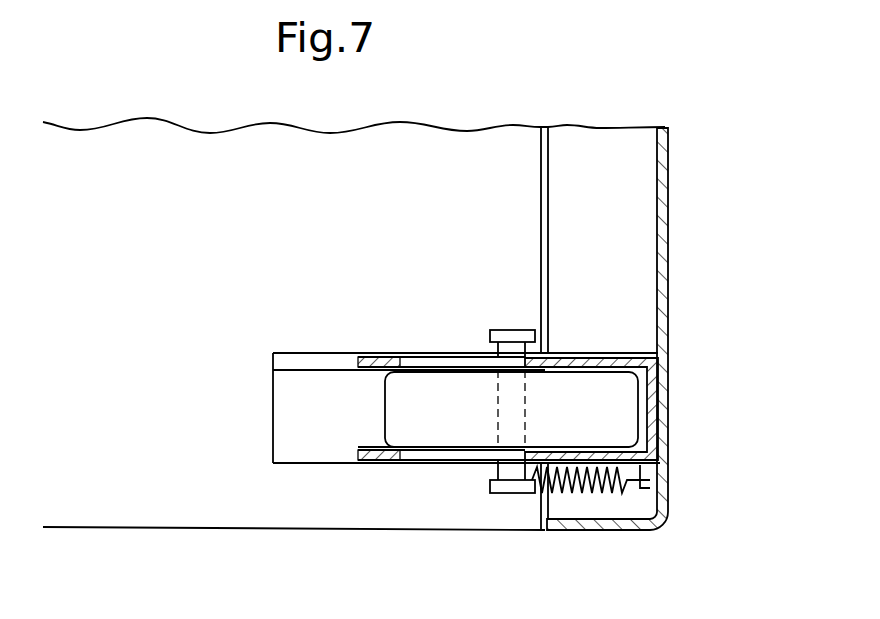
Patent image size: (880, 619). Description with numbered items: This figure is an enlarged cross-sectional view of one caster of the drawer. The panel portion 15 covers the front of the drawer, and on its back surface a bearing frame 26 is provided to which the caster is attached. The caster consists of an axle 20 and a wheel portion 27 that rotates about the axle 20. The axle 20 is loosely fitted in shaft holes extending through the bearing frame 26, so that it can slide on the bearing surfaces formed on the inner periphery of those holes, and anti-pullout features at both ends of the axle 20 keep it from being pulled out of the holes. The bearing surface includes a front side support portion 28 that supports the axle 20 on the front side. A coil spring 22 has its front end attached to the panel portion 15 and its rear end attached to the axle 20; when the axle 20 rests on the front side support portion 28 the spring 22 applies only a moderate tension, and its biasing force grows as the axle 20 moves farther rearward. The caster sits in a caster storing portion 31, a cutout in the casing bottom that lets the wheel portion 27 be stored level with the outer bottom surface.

The panel portion 15 is at (667, 273).
The axle 20 is at (508, 352).
The spring 22 is at (573, 493).
The bearing frame 26 is at (667, 373).
The wheel portion 27 is at (403, 410).
The front side support portion 28 is at (465, 465).
The caster storing portion 31 is at (274, 391).